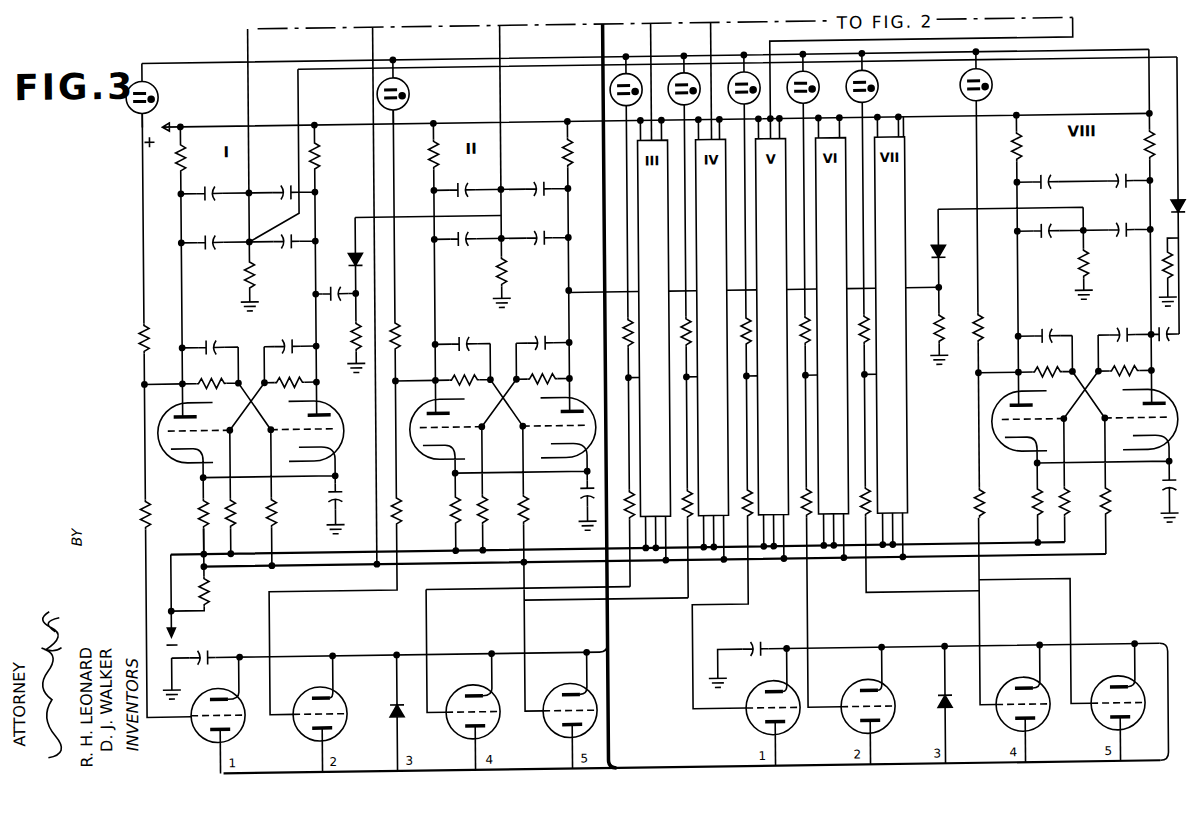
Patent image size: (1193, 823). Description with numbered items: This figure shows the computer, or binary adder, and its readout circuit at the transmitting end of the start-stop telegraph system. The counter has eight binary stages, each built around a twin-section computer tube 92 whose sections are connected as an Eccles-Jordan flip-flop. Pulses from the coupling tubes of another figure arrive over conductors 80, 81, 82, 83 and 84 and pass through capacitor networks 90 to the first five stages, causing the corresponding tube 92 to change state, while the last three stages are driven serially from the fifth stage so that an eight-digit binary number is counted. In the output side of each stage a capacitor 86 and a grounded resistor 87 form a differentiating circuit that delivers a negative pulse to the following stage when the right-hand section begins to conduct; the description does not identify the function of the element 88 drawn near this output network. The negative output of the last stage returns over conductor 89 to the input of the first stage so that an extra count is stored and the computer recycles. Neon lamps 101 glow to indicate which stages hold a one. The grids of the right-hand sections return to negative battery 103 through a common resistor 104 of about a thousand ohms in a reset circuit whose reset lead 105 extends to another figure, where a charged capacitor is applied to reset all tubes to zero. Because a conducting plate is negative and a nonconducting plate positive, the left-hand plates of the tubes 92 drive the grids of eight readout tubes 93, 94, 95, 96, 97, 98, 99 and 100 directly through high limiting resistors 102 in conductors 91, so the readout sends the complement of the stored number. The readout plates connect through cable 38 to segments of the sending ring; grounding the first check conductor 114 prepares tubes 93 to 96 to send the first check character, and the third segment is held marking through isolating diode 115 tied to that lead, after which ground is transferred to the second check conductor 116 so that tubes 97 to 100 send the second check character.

The cable 38 is at (606, 40).
The conductor 80 is at (251, 40).
The conductor 81 is at (503, 39).
The conductor 82 is at (654, 40).
The conductor 83 is at (714, 40).
The conductor 84 is at (1077, 30).
The capacitor 86 is at (343, 268).
The grounded resistor 87 is at (353, 336).
The rectifier 88 is at (1177, 203).
The conductor 89 is at (301, 106).
The capacitor network 90 is at (262, 223).
The conductor 91 is at (145, 403).
The twin-section computer tube 92 is at (261, 456).
The readout tube 93 is at (203, 740).
The readout tube 94 is at (337, 730).
The readout tube 95 is at (451, 739).
The readout tube 96 is at (564, 741).
The readout tube 97 is at (748, 728).
The readout tube 98 is at (893, 734).
The readout tube 99 is at (1000, 725).
The readout tube 100 is at (1112, 729).
The neon lamp 101 is at (129, 103).
The high limiting resistor 102 is at (145, 501).
The negative battery 103 is at (174, 624).
The common resistor 104 is at (207, 588).
The reset lead 105 is at (376, 39).
The first check conductor 114 is at (585, 652).
The isolating diode 115 is at (395, 702).
The second check conductor 116 is at (1166, 649).